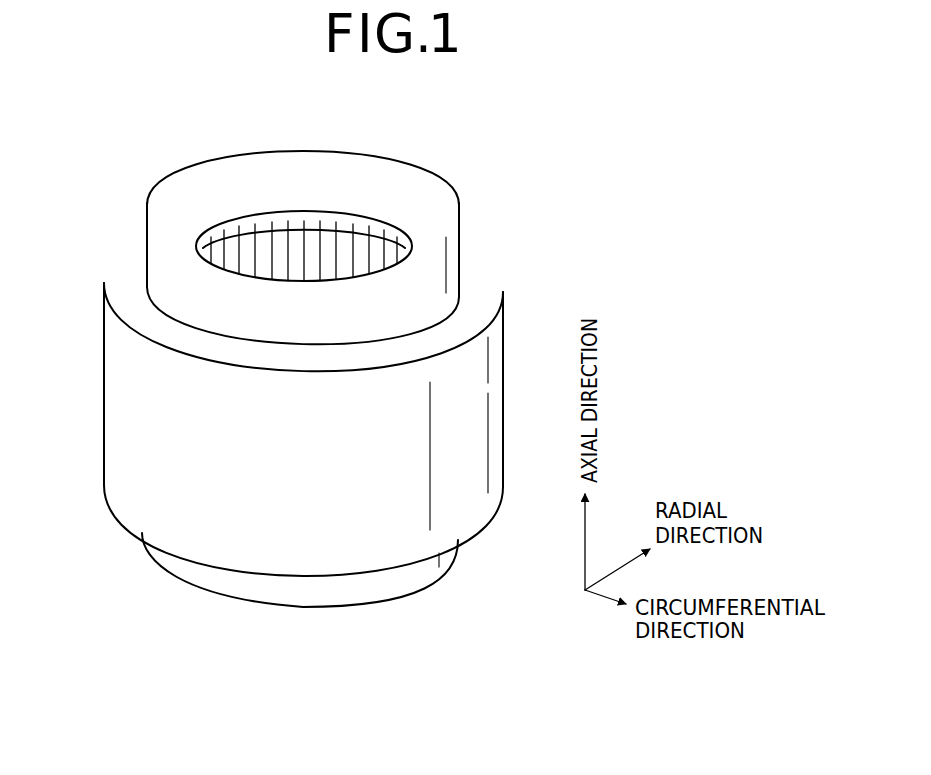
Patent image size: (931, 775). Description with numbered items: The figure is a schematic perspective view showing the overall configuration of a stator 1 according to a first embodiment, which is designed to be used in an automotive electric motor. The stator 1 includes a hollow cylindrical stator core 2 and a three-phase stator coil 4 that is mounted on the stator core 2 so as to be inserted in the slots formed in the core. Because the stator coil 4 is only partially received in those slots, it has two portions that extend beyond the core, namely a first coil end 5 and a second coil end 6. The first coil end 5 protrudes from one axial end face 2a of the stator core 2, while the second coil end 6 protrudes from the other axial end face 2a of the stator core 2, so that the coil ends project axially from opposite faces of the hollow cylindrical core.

The stator 1 is at (309, 366).
The stator core 2 is at (335, 386).
The axial end face 2a is at (487, 265).
The three-phase stator coil 4 is at (327, 209).
The first coil end 5 is at (343, 603).
The second coil end 6 is at (245, 150).